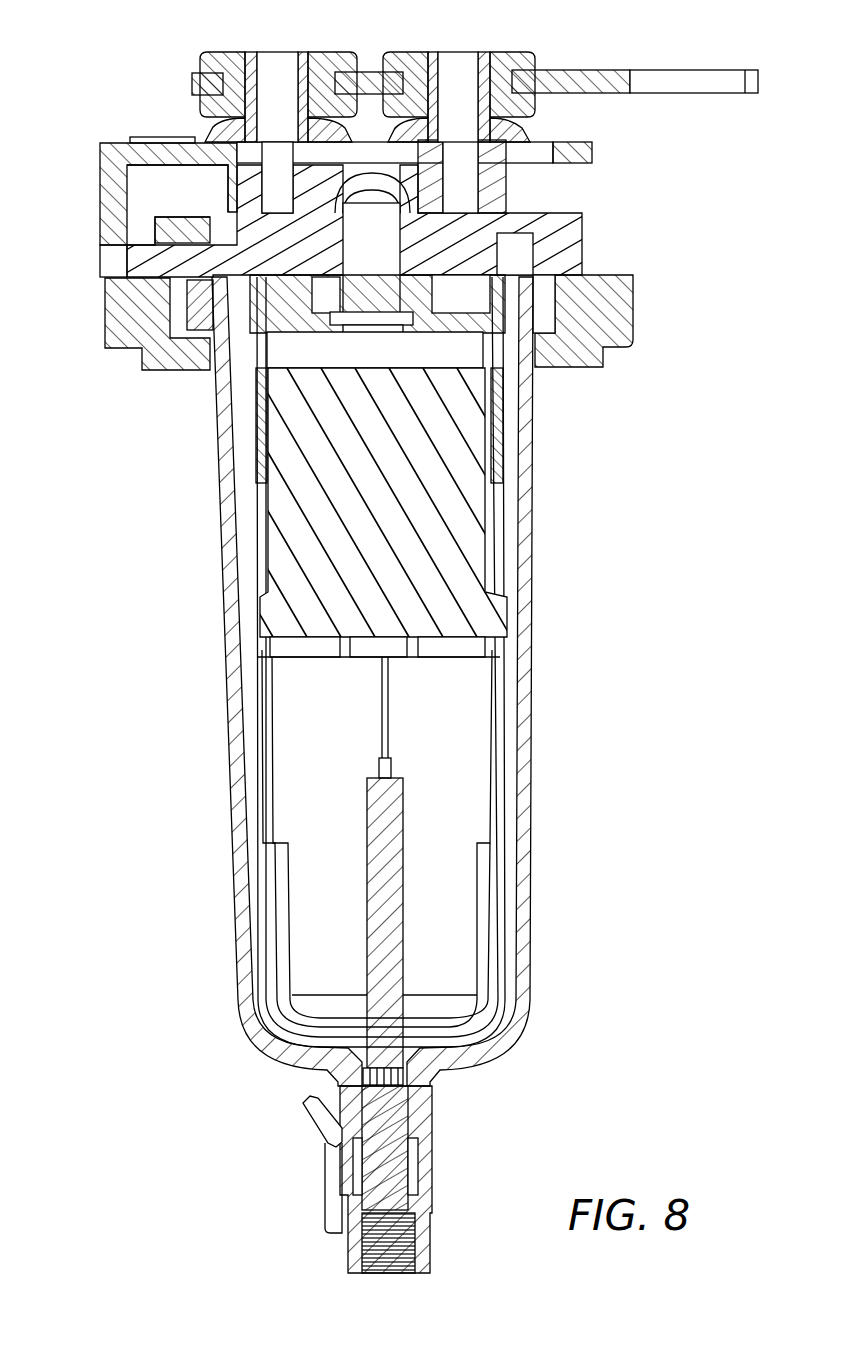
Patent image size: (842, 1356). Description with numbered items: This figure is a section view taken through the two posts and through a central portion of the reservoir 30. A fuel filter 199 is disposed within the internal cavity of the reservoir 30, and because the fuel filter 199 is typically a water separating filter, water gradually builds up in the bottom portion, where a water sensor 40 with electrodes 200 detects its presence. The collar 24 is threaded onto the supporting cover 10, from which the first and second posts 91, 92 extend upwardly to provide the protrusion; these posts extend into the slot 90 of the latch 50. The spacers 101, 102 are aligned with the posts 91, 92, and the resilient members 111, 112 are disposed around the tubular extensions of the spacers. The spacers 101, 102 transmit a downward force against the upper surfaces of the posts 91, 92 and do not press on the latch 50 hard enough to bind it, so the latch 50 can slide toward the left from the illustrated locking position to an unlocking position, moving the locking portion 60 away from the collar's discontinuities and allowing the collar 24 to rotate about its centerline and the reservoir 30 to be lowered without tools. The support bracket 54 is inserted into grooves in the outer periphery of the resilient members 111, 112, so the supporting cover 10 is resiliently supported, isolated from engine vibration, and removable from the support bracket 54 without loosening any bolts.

The supporting cover 10 is at (575, 232).
The collar 24 is at (623, 315).
The reservoir 30 is at (533, 748).
The water sensor 40 is at (397, 1132).
The latch 50 is at (593, 152).
The support bracket 54 is at (622, 95).
The locking portion 60 is at (102, 193).
The slot 90 is at (540, 141).
The first post 91 is at (226, 186).
The second post 92 is at (506, 208).
The first spacer 101 is at (273, 54).
The second spacer 102 is at (460, 53).
The first resilient member 111 is at (213, 57).
The second resilient member 112 is at (530, 56).
The fuel filter 199 is at (470, 517).
The electrodes 200 is at (389, 775).